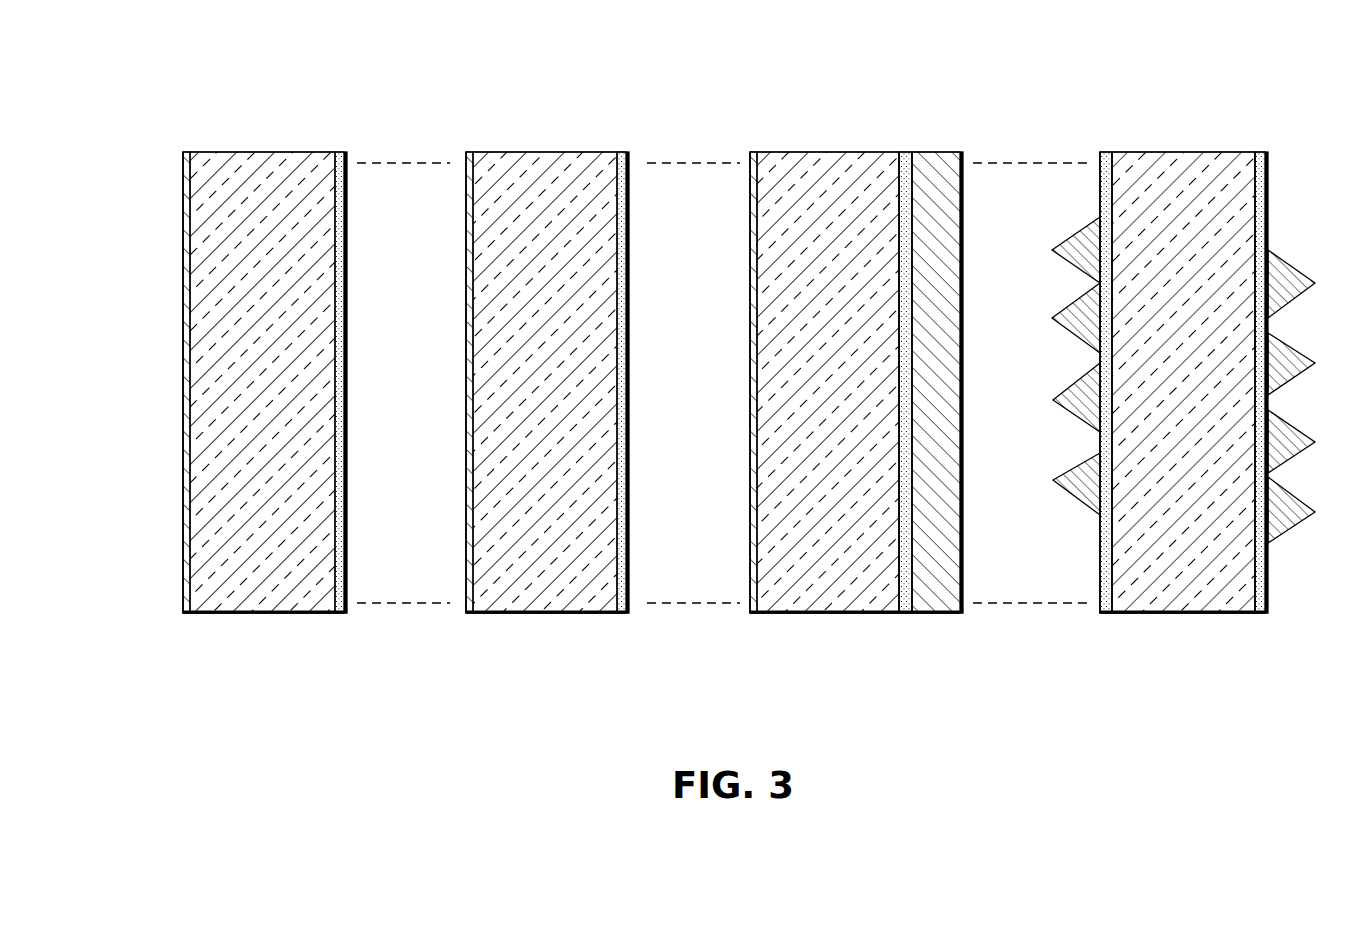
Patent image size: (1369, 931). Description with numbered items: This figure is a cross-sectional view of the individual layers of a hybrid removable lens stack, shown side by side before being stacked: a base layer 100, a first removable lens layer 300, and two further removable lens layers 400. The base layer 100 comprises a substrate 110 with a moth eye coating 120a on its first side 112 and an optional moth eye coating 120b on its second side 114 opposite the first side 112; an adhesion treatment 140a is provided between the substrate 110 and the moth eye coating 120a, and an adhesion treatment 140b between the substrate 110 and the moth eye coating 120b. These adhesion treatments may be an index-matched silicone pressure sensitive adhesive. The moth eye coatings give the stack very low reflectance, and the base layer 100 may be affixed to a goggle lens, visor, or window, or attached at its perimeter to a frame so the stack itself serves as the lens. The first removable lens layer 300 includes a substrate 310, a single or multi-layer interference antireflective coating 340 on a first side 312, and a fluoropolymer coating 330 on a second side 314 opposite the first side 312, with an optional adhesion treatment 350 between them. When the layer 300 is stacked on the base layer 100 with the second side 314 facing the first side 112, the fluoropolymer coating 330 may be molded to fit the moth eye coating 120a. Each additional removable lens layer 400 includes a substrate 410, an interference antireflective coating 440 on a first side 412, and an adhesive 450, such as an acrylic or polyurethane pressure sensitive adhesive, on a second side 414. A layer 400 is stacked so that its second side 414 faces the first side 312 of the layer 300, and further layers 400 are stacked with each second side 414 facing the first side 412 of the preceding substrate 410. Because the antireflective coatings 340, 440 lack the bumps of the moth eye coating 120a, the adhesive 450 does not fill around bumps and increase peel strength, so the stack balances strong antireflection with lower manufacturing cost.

The base layer 100 is at (1315, 145).
The substrate 110 is at (1197, 590).
The first side 112 is at (1110, 568).
The second side 114 is at (1258, 568).
The moth eye coating 120a is at (1072, 405).
The moth eye coating 120b is at (1303, 442).
The adhesion treatment 140a is at (1106, 196).
The adhesion treatment 140b is at (1262, 193).
The first removable lens layer 300 is at (967, 145).
The substrate 310 is at (845, 590).
The first side 312 is at (752, 570).
The second side 314 is at (900, 568).
The fluoropolymer coating 330 is at (945, 360).
The interference antireflective coating 340 is at (753, 194).
The adhesion treatment 350 is at (907, 278).
The removable lens layer 400 is at (353, 145).
The substrate 410 is at (273, 590).
The first side 412 is at (185, 570).
The second side 414 is at (337, 568).
The interference antireflective coating 440 is at (186, 194).
The adhesive 450 is at (345, 280).